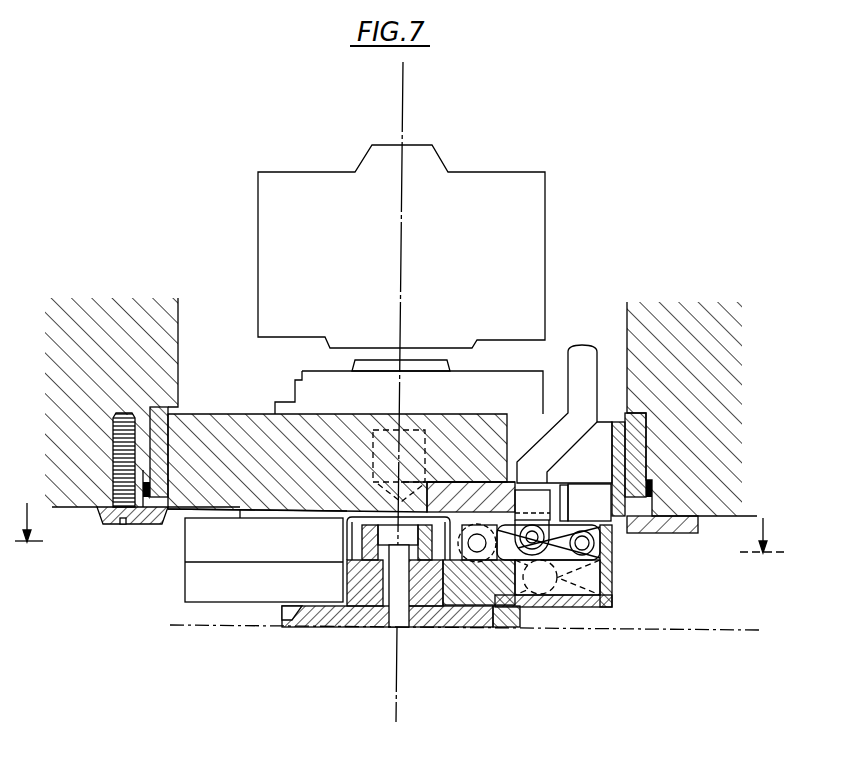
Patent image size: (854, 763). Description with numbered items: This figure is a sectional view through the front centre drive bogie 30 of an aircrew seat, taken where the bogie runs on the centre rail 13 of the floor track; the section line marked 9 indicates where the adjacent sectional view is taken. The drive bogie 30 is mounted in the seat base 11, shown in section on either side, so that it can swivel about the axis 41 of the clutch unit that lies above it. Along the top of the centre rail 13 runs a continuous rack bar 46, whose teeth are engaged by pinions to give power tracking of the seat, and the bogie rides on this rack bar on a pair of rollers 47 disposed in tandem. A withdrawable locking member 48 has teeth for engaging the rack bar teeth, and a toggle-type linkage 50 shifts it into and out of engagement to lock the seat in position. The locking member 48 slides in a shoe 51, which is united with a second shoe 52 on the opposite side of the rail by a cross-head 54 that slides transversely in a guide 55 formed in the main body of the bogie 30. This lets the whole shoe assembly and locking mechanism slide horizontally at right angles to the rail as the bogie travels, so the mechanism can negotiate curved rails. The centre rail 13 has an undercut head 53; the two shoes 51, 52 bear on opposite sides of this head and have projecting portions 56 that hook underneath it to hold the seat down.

The section line 9- 9 is at (400, 540).
The seat base 11 is at (708, 433).
The centre rail 13 is at (389, 595).
The drive bogie 30 is at (170, 497).
The axis of the clutch unit 41 is at (403, 130).
The rack bar 46 is at (417, 563).
The rollers 47 is at (350, 562).
The locking member 48 is at (465, 578).
The toggle-type linkage 50 is at (588, 566).
The shoe 51 is at (500, 587).
The shoe 52 is at (223, 578).
The undercut head 53 is at (370, 577).
The cross-head 54 is at (428, 492).
The guide 55 is at (583, 502).
The projecting portions 56 is at (340, 560).